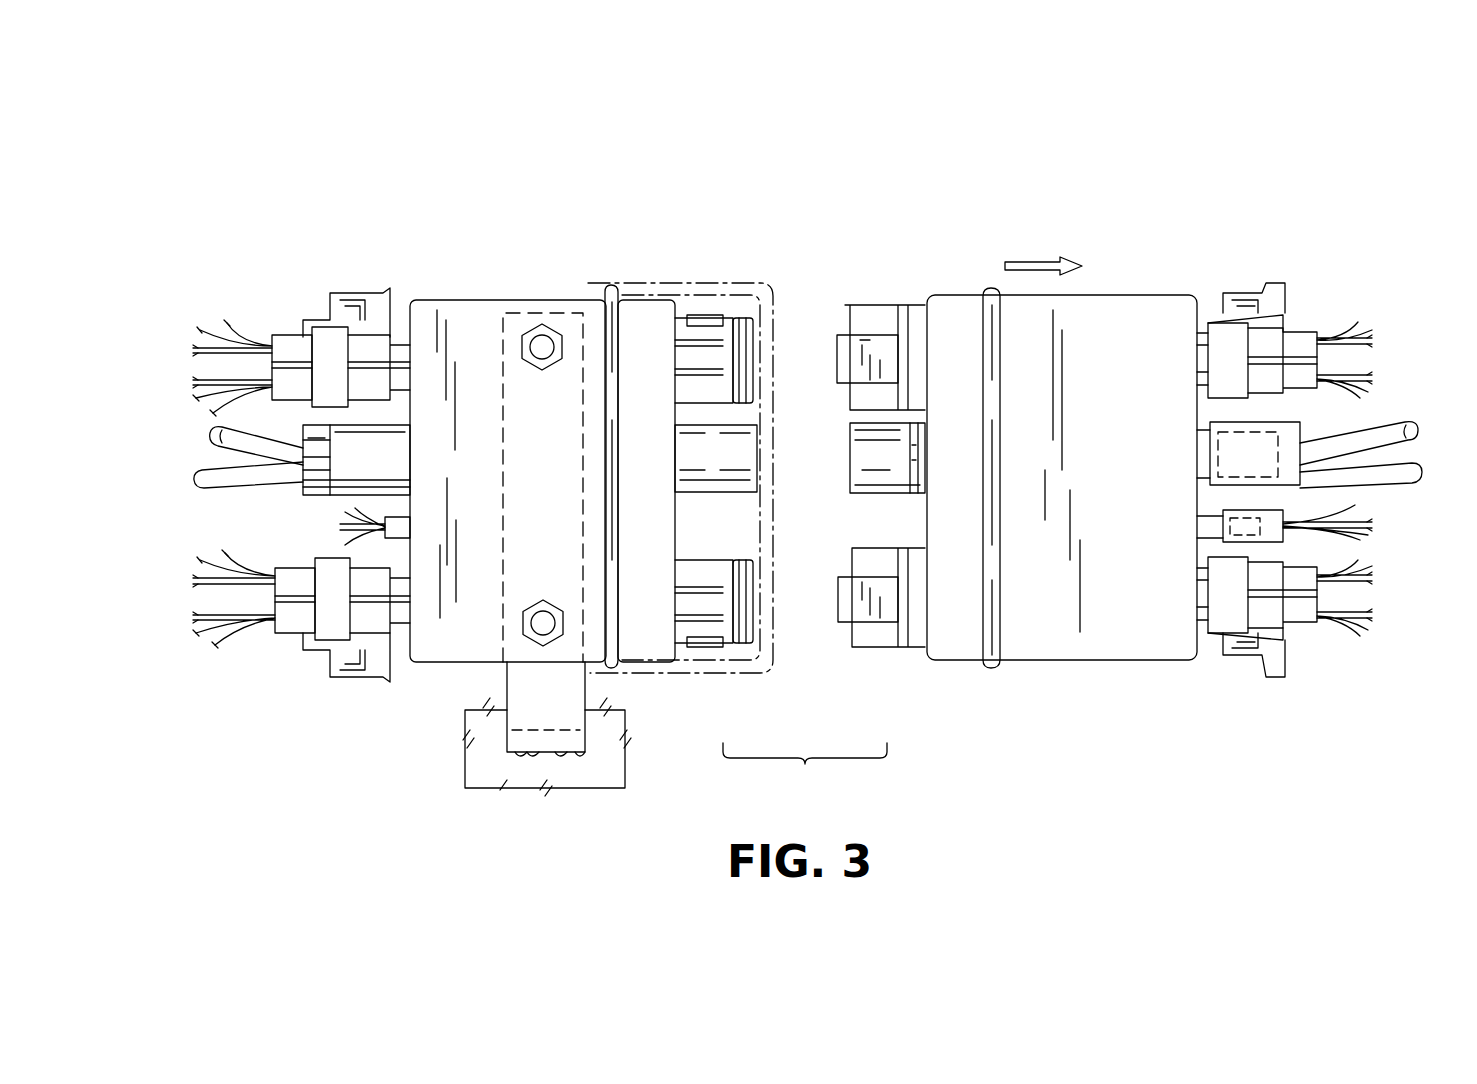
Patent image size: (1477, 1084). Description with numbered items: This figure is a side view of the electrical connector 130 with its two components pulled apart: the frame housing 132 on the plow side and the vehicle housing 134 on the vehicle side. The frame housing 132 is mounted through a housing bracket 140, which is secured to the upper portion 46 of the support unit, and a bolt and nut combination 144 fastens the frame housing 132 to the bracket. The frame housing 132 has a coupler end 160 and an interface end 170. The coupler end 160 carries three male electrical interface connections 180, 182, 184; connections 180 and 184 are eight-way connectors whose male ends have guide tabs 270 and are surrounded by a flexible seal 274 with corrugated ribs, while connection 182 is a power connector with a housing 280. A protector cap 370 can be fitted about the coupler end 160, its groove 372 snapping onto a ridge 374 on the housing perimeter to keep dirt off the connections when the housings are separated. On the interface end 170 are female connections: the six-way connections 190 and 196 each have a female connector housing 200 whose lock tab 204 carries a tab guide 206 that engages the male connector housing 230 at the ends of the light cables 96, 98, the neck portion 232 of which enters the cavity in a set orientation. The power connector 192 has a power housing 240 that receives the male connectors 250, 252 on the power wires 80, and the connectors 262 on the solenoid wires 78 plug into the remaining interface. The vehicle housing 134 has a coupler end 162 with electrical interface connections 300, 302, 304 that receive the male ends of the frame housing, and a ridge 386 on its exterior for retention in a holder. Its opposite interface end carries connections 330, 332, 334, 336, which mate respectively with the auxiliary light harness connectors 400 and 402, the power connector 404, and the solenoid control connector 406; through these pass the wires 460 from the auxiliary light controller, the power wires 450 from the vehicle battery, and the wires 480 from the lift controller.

The upper portion of support unit 46 is at (508, 788).
The solenoid wires 78 is at (355, 533).
The power wires 80 is at (197, 478).
The light cable 96 is at (200, 347).
The light cable 98 is at (198, 618).
The electrical connector 130 is at (766, 203).
The frame housing 132 is at (466, 300).
The vehicle housing 134 is at (1118, 298).
The housing bracket 140 is at (562, 714).
The bolt and nut combination 144 is at (538, 327).
The coupler end 160 is at (676, 308).
The coupler end 162 is at (920, 308).
The interface end 170 is at (407, 322).
The electrical interface connection 180 is at (728, 316).
The electrical interface connection 182 is at (750, 423).
The electrical interface connection 184 is at (732, 647).
The electrical interface connection 190 is at (312, 322).
The electrical interface connector 192 is at (405, 436).
The electrical interface connection 196 is at (325, 637).
The female connector housing 200 is at (332, 338).
The lock tab 204 is at (338, 327).
The tab guide 206 is at (372, 300).
The male connector housing 230 is at (282, 337).
The neck portion 232 is at (280, 337).
The power housing 240 is at (396, 459).
The male connector 250 is at (313, 458).
The male connector 252 is at (313, 495).
The connector 262 is at (410, 527).
The guide tabs 270 is at (706, 322).
The flexible seal 274 is at (744, 343).
The housing 280 is at (725, 492).
The electrical interface connection 300 is at (855, 305).
The electrical interface connection 302 is at (917, 452).
The electrical interface connection 304 is at (887, 645).
The electrical interface connection 330 is at (1200, 378).
The electrical interface connection 332 is at (1203, 452).
The electrical interface connection 334 is at (1205, 527).
The electrical interface connection 336 is at (1203, 610).
The protector cap 370 is at (655, 283).
The groove 372 is at (614, 663).
The ridge 374 is at (606, 292).
The ridge 386 is at (989, 290).
The connector 400 is at (1297, 330).
The connector 402 is at (1314, 630).
The power connector 404 is at (1303, 432).
The solenoid control connector 406 is at (1285, 511).
The power wires 450 is at (1402, 430).
The wires 460 is at (1374, 340).
The wires 480 is at (1374, 523).